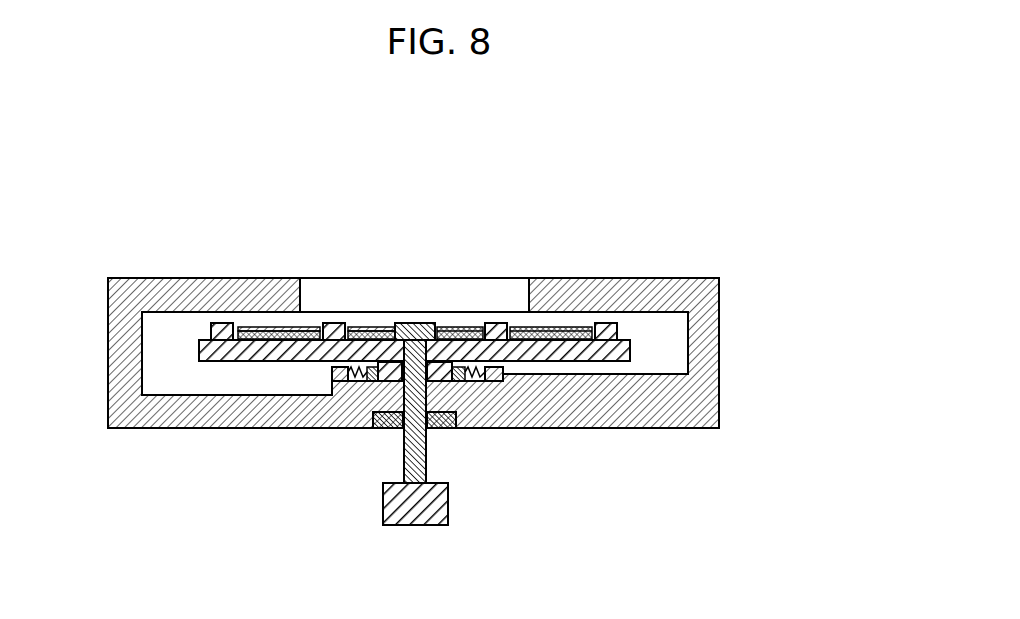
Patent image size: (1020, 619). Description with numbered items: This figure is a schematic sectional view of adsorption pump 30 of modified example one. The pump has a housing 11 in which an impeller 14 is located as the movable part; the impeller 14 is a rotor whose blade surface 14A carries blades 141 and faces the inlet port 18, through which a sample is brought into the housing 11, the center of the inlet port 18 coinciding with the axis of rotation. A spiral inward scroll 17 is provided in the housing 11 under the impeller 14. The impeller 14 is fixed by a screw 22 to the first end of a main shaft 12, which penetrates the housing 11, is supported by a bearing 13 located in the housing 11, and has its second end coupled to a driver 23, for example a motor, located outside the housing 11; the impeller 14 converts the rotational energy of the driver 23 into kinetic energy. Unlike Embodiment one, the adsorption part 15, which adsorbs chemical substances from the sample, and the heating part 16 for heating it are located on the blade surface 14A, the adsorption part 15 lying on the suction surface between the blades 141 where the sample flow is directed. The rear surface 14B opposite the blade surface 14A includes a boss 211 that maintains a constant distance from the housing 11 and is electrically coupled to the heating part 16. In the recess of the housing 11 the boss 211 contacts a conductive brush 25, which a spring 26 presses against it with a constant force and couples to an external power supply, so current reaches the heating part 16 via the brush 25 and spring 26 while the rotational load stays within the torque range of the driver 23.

The housing 11 is at (663, 298).
The main shaft 12 is at (420, 455).
The bearing 13 is at (448, 430).
The impeller 14 is at (402, 209).
The blade surface 14A is at (288, 327).
The rear surface 14B is at (307, 327).
The blades 141 is at (337, 325).
The adsorption part 15 is at (463, 327).
The heating part 16 is at (483, 363).
The scroll 17 is at (219, 383).
The inlet port 18 is at (417, 292).
The screw 22 is at (427, 324).
The driver 23 is at (382, 513).
The conductive brush 25 is at (358, 373).
The spring 26 is at (346, 369).
The boss 211 is at (386, 377).
The adsorption pump 30 is at (632, 135).